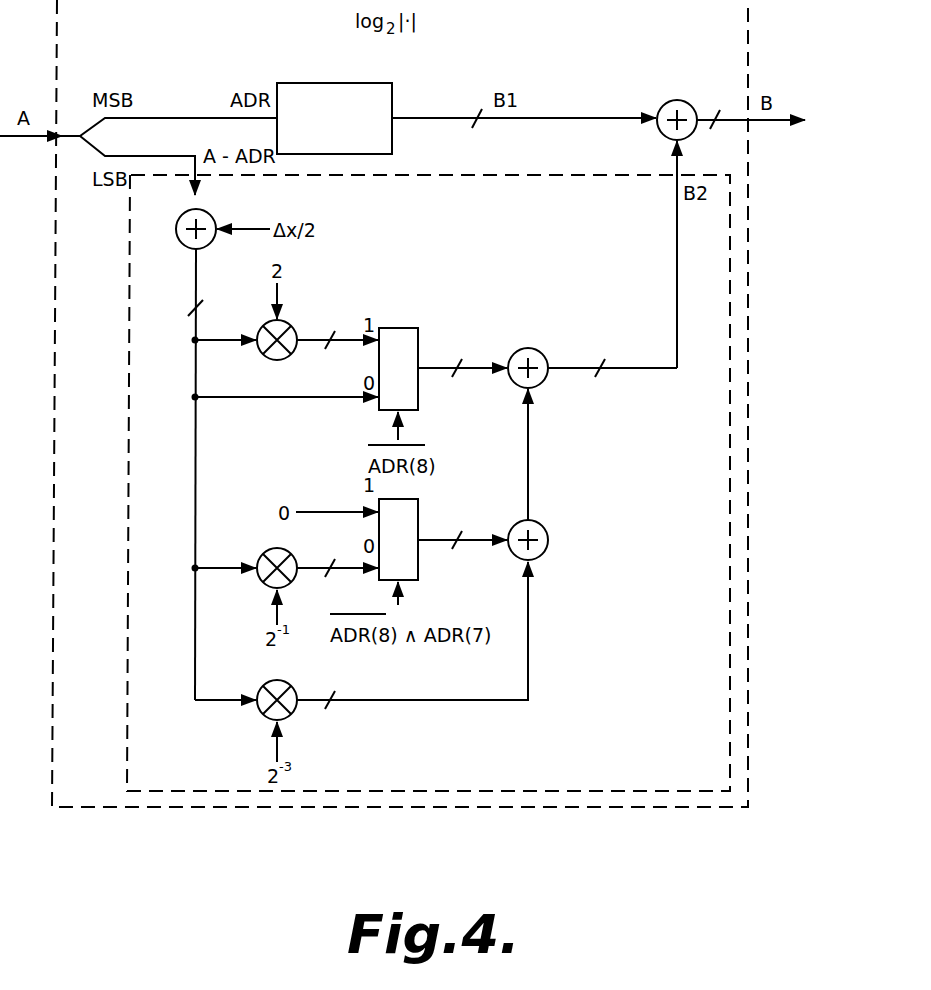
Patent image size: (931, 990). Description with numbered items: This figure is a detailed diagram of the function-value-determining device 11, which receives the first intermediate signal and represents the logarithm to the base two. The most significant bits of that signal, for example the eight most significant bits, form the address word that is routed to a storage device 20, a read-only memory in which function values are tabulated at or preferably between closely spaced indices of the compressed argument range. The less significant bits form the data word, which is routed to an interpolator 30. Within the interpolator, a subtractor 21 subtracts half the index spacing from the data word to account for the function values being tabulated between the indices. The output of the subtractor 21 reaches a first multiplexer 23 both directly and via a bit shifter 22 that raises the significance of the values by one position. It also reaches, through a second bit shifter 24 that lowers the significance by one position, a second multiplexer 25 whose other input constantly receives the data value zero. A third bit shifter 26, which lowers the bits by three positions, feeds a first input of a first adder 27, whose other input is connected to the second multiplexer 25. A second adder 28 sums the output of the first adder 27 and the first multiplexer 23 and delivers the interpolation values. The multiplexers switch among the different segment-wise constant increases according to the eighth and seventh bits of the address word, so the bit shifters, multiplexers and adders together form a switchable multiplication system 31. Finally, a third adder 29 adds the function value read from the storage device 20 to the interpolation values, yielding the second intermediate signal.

The function-value-determining device 11 is at (751, 22).
The storage device 20 is at (308, 82).
The subtractor 21 is at (186, 243).
The bit shifter 22 is at (291, 329).
The first multiplexer 23 is at (408, 328).
The second bit shifter 24 is at (259, 578).
The second multiplexer 25 is at (420, 562).
The third bit shifter 26 is at (259, 712).
The first adder 27 is at (546, 556).
The second adder 28 is at (540, 350).
The third adder 29 is at (668, 103).
The interpolator 30 is at (733, 232).
The switchable multiplication system 31 is at (450, 340).